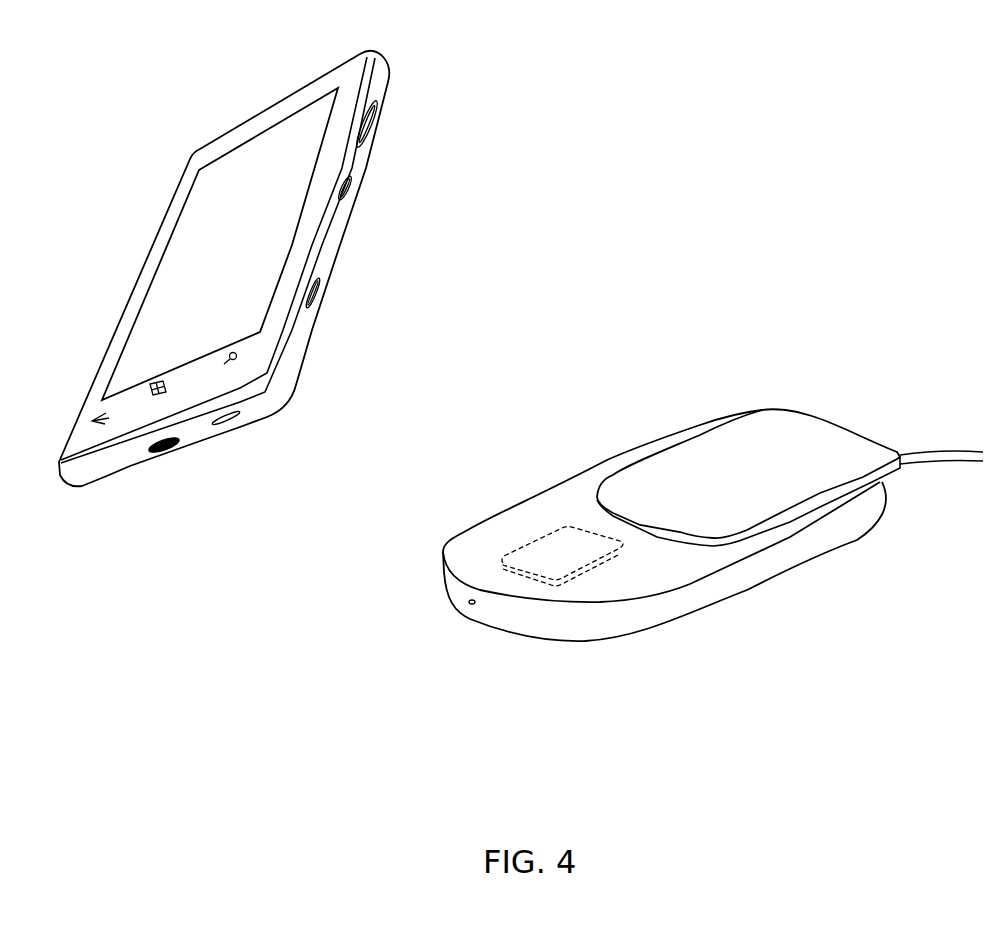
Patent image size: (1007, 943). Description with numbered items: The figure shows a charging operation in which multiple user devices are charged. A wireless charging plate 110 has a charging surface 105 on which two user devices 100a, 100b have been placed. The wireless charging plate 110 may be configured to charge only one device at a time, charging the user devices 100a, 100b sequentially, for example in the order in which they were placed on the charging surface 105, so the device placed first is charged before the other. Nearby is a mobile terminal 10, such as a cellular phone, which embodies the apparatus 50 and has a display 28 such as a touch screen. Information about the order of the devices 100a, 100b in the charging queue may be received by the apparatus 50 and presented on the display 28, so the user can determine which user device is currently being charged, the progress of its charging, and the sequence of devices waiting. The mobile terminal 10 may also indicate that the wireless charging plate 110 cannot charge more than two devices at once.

The apparatus 50 is at (211, 334).
The display 28 is at (187, 272).
The mobile terminal 10 is at (107, 467).
The charging surface 105 is at (691, 511).
The user device 100a is at (700, 465).
The user device 100b is at (540, 553).
The wireless charging plate 110 is at (687, 600).